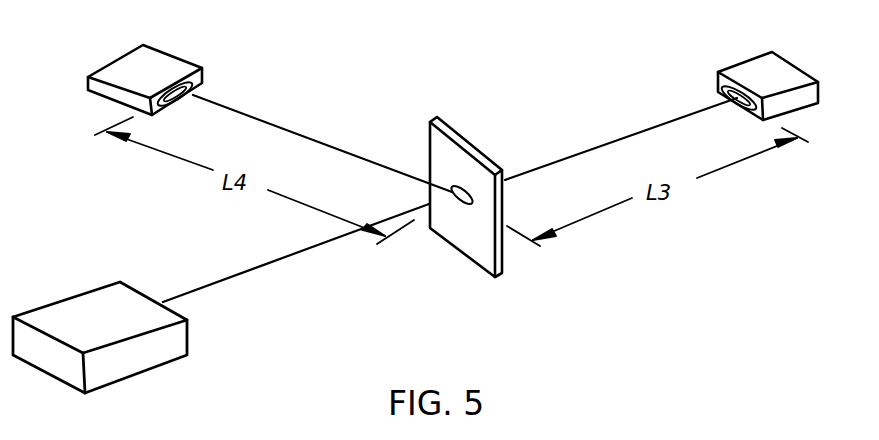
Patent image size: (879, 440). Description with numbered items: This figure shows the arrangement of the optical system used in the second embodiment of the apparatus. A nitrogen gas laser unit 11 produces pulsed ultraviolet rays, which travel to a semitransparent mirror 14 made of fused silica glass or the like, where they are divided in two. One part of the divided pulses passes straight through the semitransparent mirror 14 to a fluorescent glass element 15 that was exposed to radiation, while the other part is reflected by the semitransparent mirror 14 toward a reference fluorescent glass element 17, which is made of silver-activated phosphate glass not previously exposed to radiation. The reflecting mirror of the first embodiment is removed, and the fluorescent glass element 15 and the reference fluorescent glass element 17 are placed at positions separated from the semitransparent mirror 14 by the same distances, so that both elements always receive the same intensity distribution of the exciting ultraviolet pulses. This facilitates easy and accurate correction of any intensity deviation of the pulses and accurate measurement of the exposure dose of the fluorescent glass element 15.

The nitrogen gas laser unit 11 is at (145, 377).
The semitransparent mirror 14 is at (468, 138).
The fluorescent glass element 15 is at (762, 56).
The reference fluorescent glass element 17 is at (170, 52).